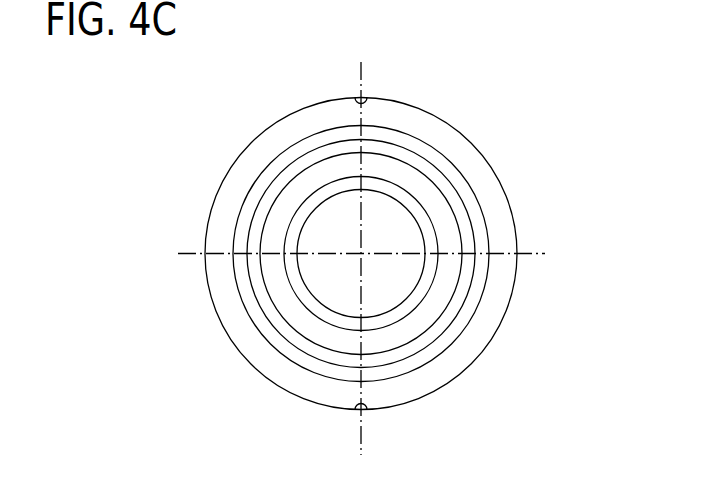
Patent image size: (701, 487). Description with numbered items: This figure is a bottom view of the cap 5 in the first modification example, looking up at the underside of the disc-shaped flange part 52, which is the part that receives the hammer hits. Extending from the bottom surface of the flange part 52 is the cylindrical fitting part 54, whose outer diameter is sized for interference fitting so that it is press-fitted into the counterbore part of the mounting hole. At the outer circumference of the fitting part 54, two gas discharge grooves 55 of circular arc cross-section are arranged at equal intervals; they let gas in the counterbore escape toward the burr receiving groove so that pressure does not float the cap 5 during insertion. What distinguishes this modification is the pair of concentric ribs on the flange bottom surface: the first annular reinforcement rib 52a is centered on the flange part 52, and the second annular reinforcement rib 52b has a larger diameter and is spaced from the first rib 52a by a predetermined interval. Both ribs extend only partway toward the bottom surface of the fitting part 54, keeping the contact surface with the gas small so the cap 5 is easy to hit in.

The cap 5 is at (520, 143).
The flange part 52 is at (408, 207).
The first annular reinforcement rib 52a is at (383, 190).
The second annular reinforcement rib 52b is at (423, 167).
The fitting part 54 is at (513, 208).
The gas discharge groove 55 is at (357, 96).